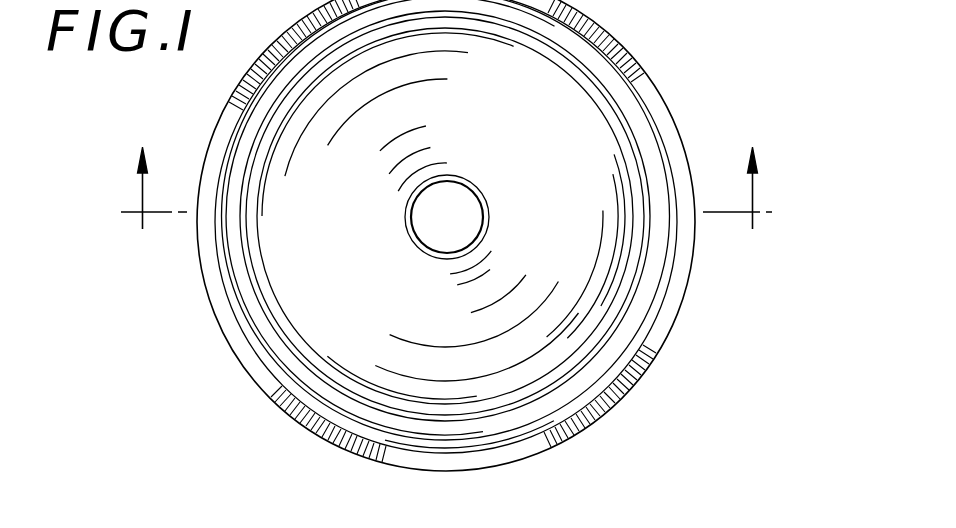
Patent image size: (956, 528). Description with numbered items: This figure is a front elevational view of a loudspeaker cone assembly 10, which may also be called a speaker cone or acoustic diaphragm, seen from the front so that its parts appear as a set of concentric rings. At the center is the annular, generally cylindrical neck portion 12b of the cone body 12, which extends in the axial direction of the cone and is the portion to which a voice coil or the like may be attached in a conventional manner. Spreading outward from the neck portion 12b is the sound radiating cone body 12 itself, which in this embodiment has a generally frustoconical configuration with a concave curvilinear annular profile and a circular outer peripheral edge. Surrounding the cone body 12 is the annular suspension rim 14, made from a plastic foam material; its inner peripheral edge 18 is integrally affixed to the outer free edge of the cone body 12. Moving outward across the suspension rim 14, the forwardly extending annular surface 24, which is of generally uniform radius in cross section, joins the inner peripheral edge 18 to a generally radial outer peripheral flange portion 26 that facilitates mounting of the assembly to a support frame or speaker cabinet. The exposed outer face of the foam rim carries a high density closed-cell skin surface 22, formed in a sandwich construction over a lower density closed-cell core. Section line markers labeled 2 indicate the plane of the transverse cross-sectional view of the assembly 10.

The loudspeaker cone assembly 10 is at (228, 395).
The cone body 12 is at (553, 302).
The neck portion 12b is at (406, 232).
The suspension rim 14 is at (598, 418).
The inner peripheral edge 18 is at (620, 148).
The outer skin surface 22 is at (348, 440).
The forwardly extending annular surface 24 is at (293, 372).
The outer peripheral flange portion 26 is at (410, 471).
The section line 2- 2 is at (452, 196).